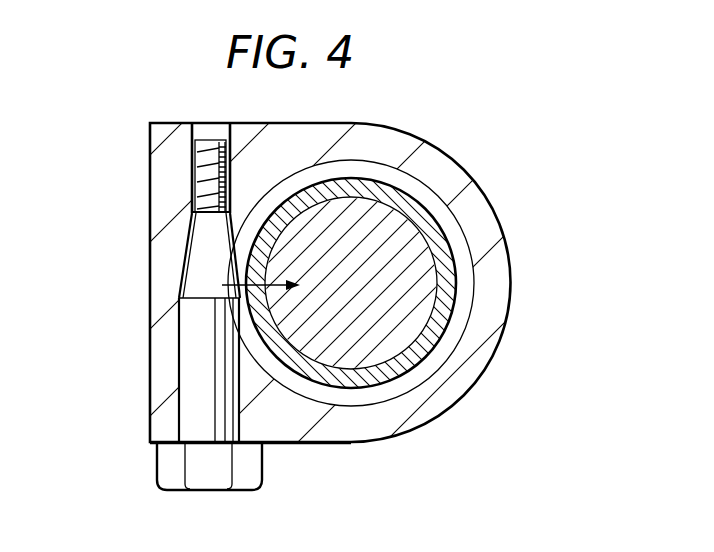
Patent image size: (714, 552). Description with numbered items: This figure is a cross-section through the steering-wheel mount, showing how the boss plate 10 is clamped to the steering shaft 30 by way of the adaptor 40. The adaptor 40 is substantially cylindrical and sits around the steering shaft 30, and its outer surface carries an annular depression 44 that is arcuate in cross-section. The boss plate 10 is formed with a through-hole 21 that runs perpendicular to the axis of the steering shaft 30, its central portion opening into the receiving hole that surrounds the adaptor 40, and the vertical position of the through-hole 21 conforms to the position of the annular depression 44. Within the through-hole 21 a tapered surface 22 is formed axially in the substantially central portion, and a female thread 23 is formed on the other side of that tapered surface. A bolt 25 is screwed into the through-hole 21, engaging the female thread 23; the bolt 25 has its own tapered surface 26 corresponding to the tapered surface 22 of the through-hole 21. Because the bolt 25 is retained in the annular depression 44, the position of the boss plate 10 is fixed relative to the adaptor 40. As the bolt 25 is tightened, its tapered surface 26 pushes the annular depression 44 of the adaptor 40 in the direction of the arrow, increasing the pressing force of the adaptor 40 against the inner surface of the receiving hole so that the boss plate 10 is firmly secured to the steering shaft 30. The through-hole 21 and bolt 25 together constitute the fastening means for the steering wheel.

The boss plate 10 is at (488, 204).
The through-hole 21 is at (190, 357).
The tapered surface 22 is at (196, 272).
The female thread 23 is at (198, 162).
The bolt 25 is at (255, 462).
The tapered surface 26 is at (196, 222).
The steering shaft 30 is at (381, 212).
The adaptor 40 is at (408, 357).
The annular depression 44 is at (457, 300).